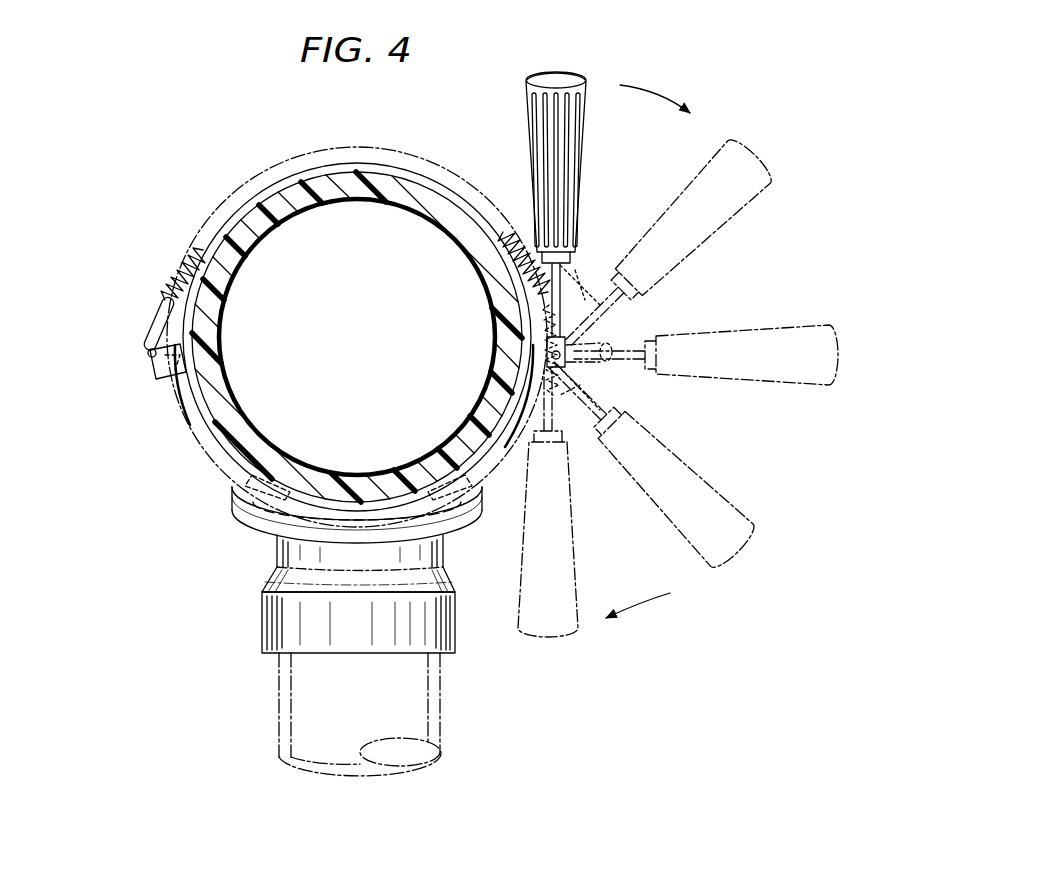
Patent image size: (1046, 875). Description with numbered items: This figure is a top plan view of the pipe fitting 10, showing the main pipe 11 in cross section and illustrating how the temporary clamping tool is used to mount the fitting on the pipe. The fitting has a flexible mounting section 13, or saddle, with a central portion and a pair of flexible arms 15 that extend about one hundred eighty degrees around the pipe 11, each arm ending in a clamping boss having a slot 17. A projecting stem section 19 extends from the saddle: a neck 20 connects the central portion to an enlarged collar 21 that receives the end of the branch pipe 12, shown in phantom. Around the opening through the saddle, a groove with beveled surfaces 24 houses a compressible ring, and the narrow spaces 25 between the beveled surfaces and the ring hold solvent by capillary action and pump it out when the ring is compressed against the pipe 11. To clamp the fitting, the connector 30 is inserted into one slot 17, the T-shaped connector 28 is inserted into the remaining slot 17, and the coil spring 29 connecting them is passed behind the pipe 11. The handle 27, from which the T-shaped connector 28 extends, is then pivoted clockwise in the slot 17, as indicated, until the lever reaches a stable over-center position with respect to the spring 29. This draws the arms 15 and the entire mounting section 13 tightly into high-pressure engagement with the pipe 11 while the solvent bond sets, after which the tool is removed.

The pipe fitting 10 is at (228, 559).
The main pipe 11 is at (284, 220).
The branch pipe 12 is at (280, 728).
The flexible mounting section 13 is at (230, 504).
The flexible arms 15 is at (190, 422).
The slot 17 is at (146, 364).
The projecting stem section 19 is at (263, 574).
The neck 20 is at (432, 553).
The enlarged collar 21 is at (450, 633).
The beveled surfaces 24 is at (245, 477).
The narrow spaces 25 is at (446, 480).
The handle 27 is at (575, 140).
The T-shaped connector 28 is at (568, 355).
The coil spring 29 is at (186, 256).
The connector 30 is at (148, 352).